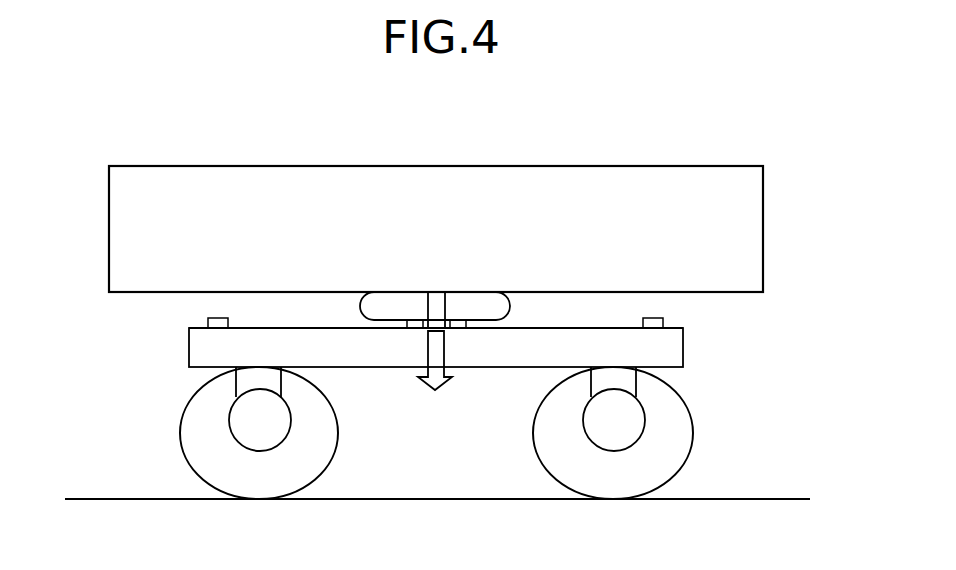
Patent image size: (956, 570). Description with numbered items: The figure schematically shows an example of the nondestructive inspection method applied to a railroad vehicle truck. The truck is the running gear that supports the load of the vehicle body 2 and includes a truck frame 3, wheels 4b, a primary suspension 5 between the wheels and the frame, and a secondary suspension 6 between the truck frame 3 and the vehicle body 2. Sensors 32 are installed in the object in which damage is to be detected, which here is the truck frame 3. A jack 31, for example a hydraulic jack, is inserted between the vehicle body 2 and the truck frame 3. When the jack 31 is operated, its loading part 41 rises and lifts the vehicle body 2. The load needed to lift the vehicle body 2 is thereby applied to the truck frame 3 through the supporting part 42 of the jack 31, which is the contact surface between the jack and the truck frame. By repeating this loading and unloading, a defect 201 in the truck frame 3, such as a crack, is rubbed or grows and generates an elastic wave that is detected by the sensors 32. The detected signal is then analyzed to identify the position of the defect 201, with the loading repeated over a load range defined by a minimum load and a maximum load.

The vehicle body 2 is at (733, 166).
The truck frame 3 is at (683, 345).
The defect 201 is at (244, 362).
The wheels 4b is at (180, 433).
The primary suspension 5 is at (233, 378).
The secondary suspension 6 is at (510, 305).
The jack 31 is at (445, 300).
The sensors 32 is at (218, 318).
The loading part 41 is at (437, 291).
The supporting part 42 is at (436, 348).